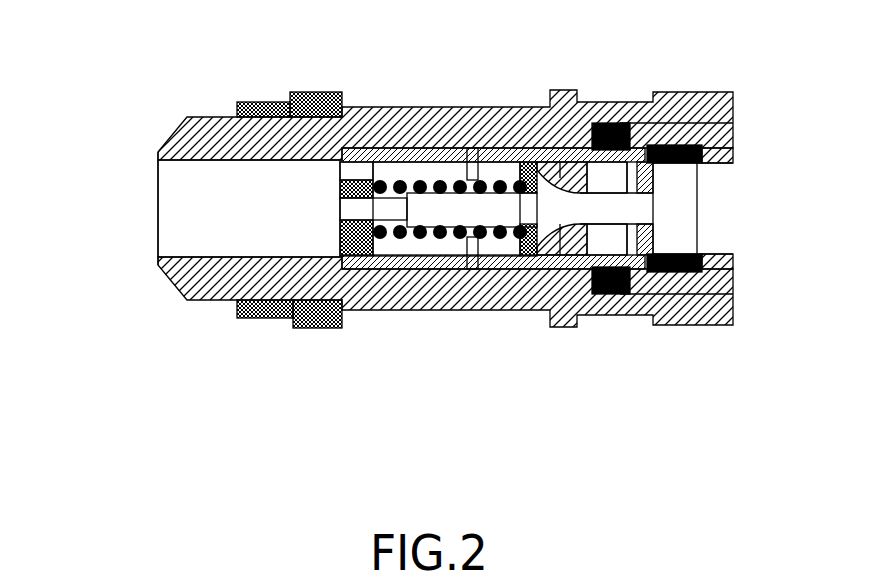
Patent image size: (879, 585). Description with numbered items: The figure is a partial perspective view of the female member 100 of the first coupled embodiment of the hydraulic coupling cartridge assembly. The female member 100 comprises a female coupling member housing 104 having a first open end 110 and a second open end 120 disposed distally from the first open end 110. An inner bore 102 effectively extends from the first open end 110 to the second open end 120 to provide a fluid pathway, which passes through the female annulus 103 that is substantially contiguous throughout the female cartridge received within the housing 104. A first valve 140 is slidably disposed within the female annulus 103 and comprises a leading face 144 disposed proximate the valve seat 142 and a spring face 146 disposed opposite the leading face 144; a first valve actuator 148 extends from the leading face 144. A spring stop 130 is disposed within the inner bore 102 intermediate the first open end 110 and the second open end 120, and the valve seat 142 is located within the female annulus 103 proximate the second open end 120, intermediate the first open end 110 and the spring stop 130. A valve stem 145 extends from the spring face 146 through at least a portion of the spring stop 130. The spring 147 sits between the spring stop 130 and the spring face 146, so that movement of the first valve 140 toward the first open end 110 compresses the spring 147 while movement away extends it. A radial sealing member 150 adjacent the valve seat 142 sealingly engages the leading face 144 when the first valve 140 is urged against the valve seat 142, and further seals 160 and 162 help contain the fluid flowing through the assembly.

The female member 100 is at (400, 85).
The inner bore 102 is at (265, 212).
The female annulus 103 is at (452, 248).
The female coupling member housing 104 is at (210, 282).
The first open end 110 is at (140, 131).
The second open end 120 is at (685, 215).
The spring stop 130 is at (355, 243).
The first valve 140 is at (553, 205).
The valve seat 142 is at (540, 237).
The leading face 144 is at (567, 237).
The valve stem 145 is at (370, 212).
The spring face 146 is at (537, 243).
The spring 147 is at (432, 238).
The first valve actuator 148 is at (610, 213).
The radial sealing member 150 is at (547, 162).
The seal 160 is at (672, 143).
The seal 162 is at (600, 142).